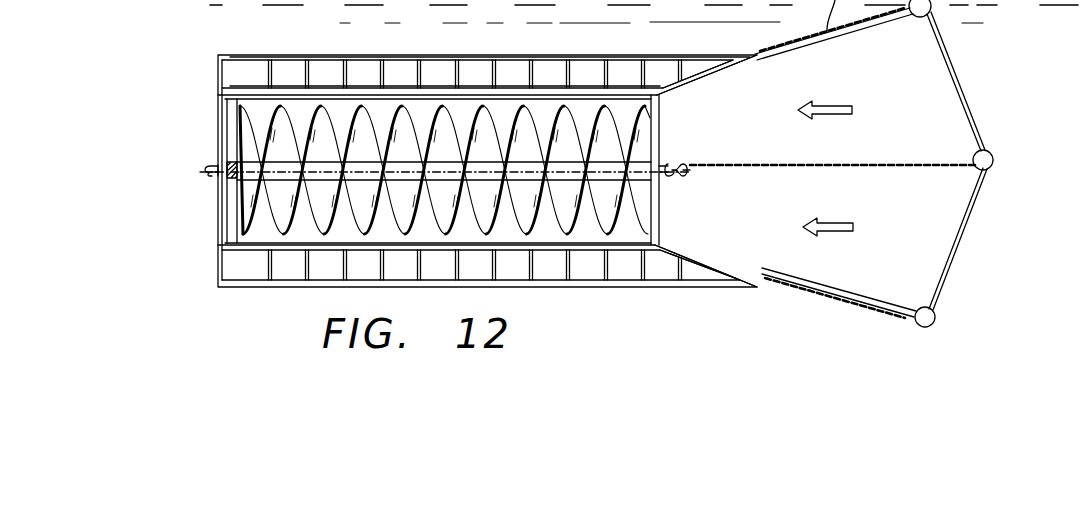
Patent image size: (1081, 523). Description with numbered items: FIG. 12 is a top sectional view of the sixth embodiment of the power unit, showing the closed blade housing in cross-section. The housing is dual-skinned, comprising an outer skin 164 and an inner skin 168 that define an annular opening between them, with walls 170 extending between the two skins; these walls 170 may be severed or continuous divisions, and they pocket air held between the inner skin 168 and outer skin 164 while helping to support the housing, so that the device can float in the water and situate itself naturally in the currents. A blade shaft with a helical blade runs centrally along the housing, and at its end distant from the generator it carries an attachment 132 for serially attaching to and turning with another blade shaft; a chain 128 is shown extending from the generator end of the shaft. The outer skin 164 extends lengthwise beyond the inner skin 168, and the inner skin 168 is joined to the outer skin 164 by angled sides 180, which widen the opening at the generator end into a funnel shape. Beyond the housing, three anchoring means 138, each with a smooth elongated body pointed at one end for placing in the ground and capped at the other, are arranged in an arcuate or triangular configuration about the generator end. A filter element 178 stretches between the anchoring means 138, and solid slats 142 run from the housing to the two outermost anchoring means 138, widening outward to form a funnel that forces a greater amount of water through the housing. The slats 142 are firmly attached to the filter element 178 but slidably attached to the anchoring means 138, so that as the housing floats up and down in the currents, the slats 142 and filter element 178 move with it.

The chain 128 is at (688, 162).
The attachment 132 is at (207, 167).
The anchoring means 138 is at (990, 168).
The slats 142 is at (867, 30).
The outer skin 164 is at (458, 53).
The inner skin 168 is at (482, 97).
The walls 170 is at (225, 99).
The filter element 178 is at (970, 90).
The angled sides 180 is at (694, 82).